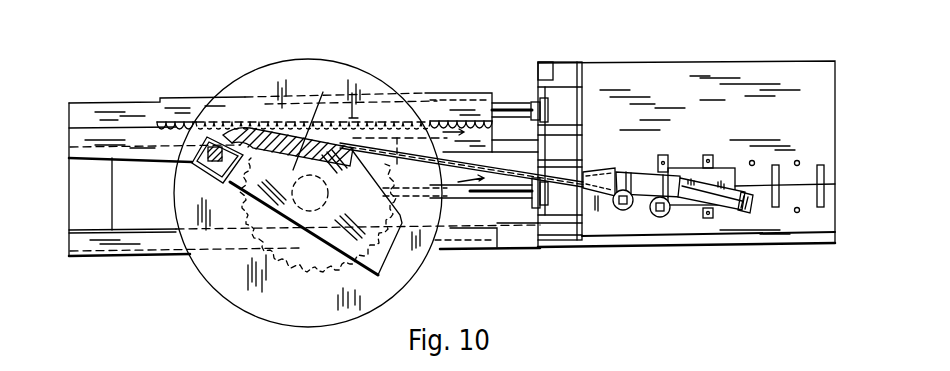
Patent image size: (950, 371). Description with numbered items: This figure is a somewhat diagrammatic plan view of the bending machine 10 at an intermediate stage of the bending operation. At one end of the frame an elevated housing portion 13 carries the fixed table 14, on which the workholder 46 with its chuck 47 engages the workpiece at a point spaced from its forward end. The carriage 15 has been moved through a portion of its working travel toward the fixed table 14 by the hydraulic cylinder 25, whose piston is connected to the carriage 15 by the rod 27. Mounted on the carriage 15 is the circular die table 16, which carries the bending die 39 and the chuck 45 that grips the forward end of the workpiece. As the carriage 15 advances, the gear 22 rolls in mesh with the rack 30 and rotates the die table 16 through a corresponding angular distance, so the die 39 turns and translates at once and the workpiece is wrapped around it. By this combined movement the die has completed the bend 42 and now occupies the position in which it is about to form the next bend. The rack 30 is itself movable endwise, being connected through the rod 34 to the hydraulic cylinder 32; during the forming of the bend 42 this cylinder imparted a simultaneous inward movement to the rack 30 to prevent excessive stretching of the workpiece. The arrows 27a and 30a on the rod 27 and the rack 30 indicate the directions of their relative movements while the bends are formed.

The bending machine 10 is at (699, 52).
The housing portion 13 is at (293, 170).
The fixed table 14 is at (794, 69).
The carriage 15 is at (383, 176).
The die table 16 is at (375, 88).
The gear 22 is at (312, 264).
The hydraulic cylinder 25 is at (575, 203).
The rod 27 is at (512, 195).
The arrow 27a is at (470, 182).
The rack 30 is at (492, 127).
The arrow 30a is at (447, 123).
The hydraulic cylinder 32 is at (578, 110).
The rod 34 is at (527, 103).
The bending die 39 is at (400, 218).
The bend 42 is at (248, 120).
The chuck 45 is at (162, 131).
The workholder 46 is at (650, 173).
The chuck 47 is at (611, 172).